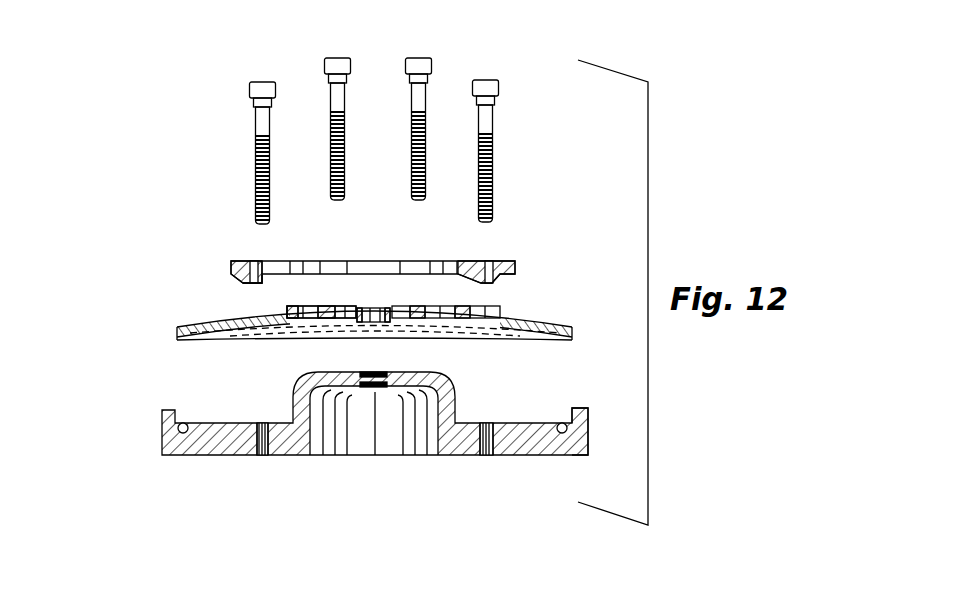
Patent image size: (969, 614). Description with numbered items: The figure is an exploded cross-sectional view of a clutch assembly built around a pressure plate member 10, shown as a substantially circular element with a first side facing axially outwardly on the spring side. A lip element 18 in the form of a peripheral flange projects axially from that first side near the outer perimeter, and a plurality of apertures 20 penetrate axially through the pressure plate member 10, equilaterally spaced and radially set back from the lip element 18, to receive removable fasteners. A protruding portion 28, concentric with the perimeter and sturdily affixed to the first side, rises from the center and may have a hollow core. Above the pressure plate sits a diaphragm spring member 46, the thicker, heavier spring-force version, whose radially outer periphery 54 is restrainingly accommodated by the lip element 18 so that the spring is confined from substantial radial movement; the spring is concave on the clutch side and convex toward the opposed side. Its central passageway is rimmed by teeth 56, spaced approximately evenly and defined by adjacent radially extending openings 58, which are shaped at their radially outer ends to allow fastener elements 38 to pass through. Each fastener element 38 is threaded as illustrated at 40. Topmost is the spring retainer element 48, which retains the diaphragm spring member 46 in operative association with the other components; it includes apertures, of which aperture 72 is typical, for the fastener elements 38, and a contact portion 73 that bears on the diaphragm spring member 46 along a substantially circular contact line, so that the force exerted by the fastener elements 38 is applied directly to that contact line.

The pressure plate member 10 is at (326, 303).
The lip element 18 is at (348, 402).
The apertures 20 is at (487, 423).
The protruding portion 28 is at (405, 372).
The fastener element 38 is at (431, 112).
The threads 40 is at (494, 155).
The diaphragm spring member 46 is at (344, 289).
The spring retainer element 48 is at (364, 224).
The radially outer periphery 54 is at (177, 338).
The teeth 56 is at (345, 306).
The openings 58 is at (372, 308).
The aperture 72 is at (490, 261).
The contact portion 73 is at (262, 296).